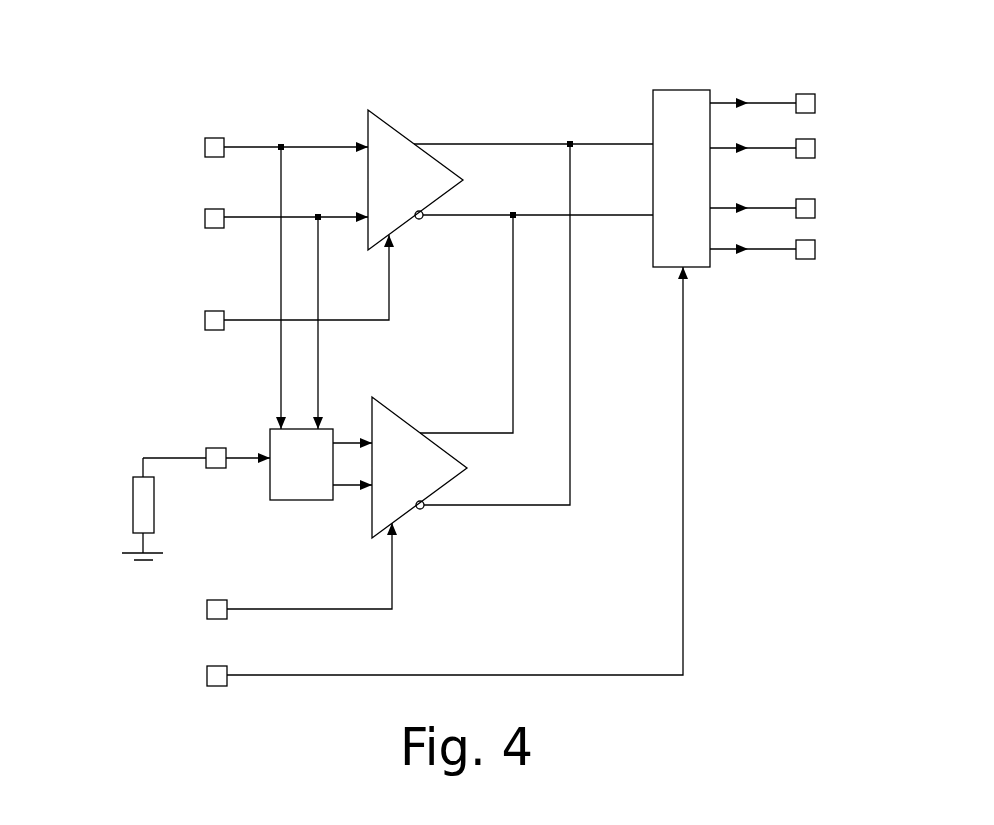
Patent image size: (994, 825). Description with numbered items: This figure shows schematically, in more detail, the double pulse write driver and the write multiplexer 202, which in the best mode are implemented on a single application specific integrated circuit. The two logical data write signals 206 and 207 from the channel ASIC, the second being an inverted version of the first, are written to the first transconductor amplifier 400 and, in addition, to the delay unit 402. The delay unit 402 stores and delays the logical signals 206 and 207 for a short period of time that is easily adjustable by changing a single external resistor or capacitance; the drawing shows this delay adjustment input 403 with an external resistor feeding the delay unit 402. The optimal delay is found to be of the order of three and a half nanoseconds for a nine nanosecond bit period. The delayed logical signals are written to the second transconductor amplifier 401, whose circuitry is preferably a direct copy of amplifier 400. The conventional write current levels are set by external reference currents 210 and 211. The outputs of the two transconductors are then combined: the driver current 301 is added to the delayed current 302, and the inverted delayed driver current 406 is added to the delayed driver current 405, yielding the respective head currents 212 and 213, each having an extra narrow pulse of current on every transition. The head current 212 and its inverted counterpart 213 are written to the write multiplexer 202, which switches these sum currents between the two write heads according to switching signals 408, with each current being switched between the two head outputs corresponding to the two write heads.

The WriteP data write signal 206 is at (262, 266).
The WriteN data write signal 207 is at (262, 305).
The external reference current 210 is at (273, 282).
The first transconductor amplifier 400 is at (415, 180).
The driver current 301 is at (493, 131).
The delayed driver current 405 is at (469, 227).
The head current 212 is at (611, 131).
The inverted head current 213 is at (583, 203).
The write multiplexer 202 is at (687, 102).
The IW Delay input with resistor 403 is at (196, 479).
The delay unit 402 is at (321, 464).
The second transconductor amplifier 401 is at (419, 467).
The inverted delayed driver current 406 is at (466, 324).
The delayed current 302 is at (497, 324).
The external reference current 211 is at (284, 571).
The switching signals 408 is at (430, 476).